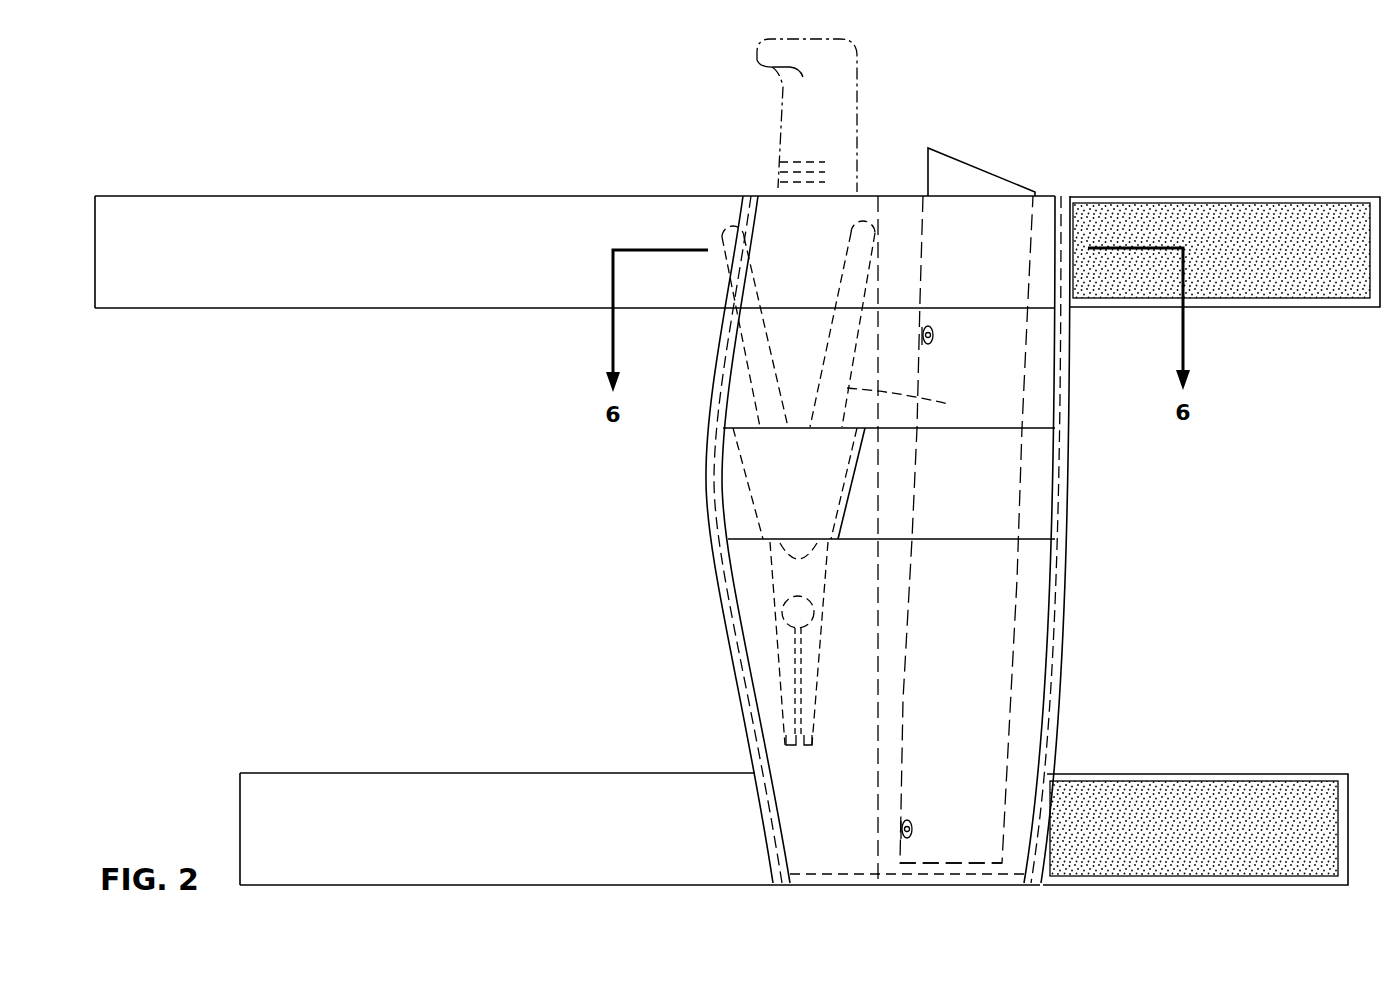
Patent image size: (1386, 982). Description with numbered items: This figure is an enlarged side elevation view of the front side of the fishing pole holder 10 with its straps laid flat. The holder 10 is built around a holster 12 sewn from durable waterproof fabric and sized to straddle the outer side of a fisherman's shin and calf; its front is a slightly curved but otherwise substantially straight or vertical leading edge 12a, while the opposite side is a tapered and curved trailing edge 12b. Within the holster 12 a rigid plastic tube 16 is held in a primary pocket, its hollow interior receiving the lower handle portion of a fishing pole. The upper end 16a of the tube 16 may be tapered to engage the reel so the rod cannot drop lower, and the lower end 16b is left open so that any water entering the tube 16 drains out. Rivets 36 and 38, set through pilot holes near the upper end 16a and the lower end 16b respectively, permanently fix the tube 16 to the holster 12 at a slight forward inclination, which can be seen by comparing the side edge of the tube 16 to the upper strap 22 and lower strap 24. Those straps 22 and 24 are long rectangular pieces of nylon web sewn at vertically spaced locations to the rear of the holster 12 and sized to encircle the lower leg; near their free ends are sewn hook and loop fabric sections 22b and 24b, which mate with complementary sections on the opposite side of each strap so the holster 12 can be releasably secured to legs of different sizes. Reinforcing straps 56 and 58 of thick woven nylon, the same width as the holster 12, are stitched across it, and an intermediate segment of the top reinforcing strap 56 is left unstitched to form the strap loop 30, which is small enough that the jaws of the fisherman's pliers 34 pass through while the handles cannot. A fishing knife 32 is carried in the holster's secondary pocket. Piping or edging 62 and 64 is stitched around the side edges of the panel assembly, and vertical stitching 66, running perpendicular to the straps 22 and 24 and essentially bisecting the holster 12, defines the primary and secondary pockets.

The fishing pole holder 10 is at (1084, 94).
The holster 12 is at (1076, 559).
The leading edge 12a is at (1068, 604).
The trailing edge 12b is at (725, 607).
The rigid plastic tube 16 is at (1014, 662).
The upper end of the tube 16a is at (967, 163).
The lower end of the tube 16b is at (923, 862).
The upper strap 22 is at (422, 205).
The hook and loop fabric section 22b is at (1273, 213).
The lower strap 24 is at (453, 783).
The hook and loop fabric section 24b is at (1202, 792).
The strap loop 30 is at (786, 495).
The fishing knife 32 is at (789, 106).
The fisherman's pliers 34 is at (912, 402).
The rivet 36 is at (935, 342).
The rivet 38 is at (914, 829).
The top reinforcing strap 56 is at (788, 268).
The lower reinforcing strap 58 is at (951, 495).
The piping or edging 62 is at (1070, 476).
The piping or edging 64 is at (714, 491).
The vertical stitching 66 is at (878, 797).